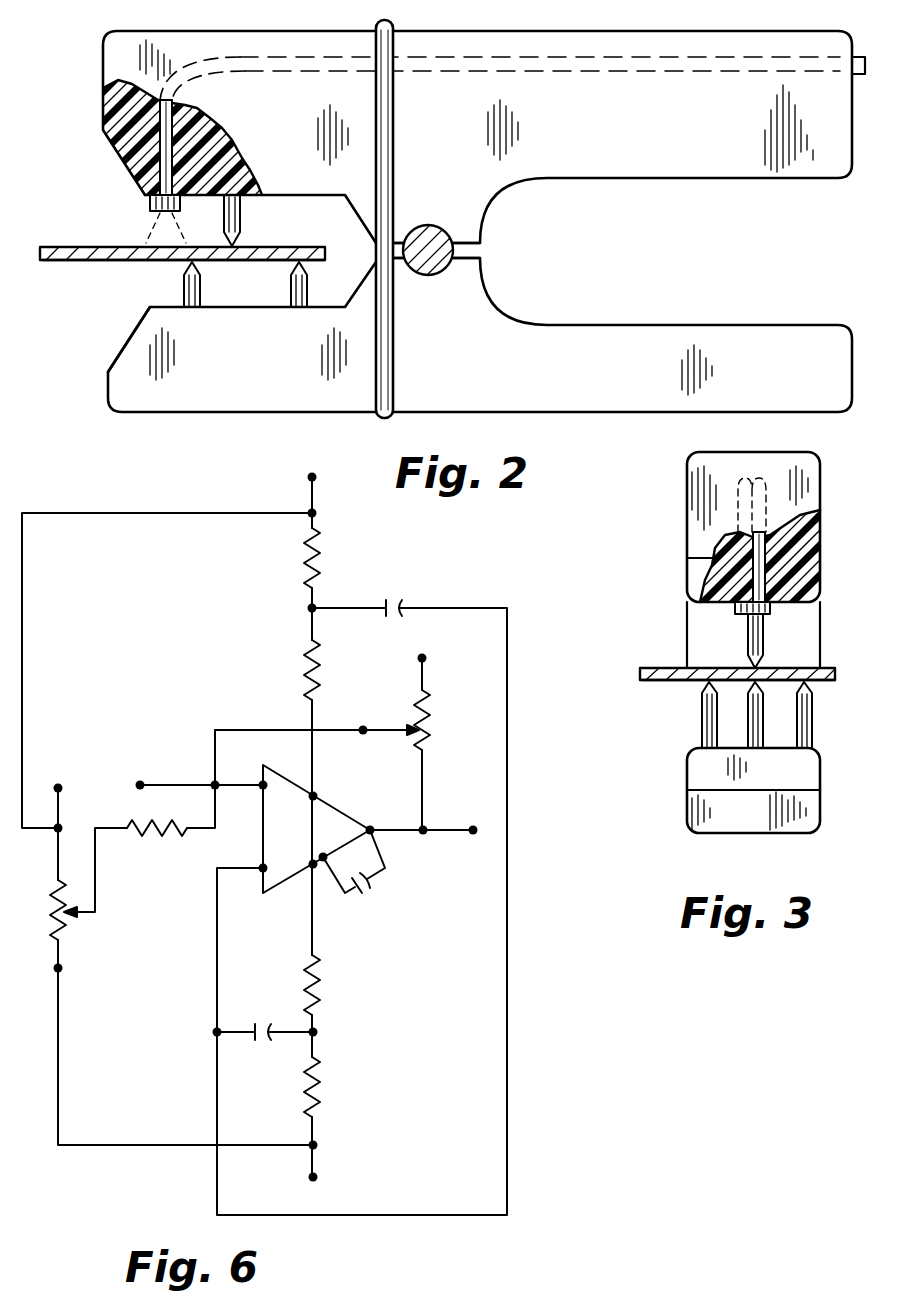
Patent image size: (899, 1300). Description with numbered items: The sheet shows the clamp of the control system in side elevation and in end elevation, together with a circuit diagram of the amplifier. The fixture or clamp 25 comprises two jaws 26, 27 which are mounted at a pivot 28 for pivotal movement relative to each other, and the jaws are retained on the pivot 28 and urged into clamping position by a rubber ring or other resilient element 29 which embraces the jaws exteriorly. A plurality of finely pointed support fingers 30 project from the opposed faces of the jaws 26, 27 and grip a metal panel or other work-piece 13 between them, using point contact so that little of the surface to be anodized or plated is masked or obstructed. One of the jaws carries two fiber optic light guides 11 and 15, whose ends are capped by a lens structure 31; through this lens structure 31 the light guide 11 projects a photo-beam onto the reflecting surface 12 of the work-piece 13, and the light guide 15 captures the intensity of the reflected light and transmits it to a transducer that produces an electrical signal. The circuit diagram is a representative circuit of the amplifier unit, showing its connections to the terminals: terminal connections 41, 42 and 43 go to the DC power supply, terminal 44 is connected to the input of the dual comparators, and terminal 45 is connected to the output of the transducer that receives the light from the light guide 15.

In FIG. 3, the fiber optic light guide 11 is at (745, 575).
In FIG. 2, the reflecting surface 12 is at (98, 251).
In FIG. 3, the reflecting surface 12 is at (673, 668).
In FIG. 2, the work-piece 13 is at (72, 262).
In FIG. 3, the work-piece 13 is at (648, 679).
In FIG. 2, the fiber optic light guide 15 is at (165, 150).
In FIG. 3, the fiber optic light guide 15 is at (760, 555).
In FIG. 2, the fixture or clamp 25 is at (108, 404).
In FIG. 3, the fixture or clamp 25 is at (687, 785).
In FIG. 2, the jaw 26 is at (105, 58).
In FIG. 3, the jaw 26 is at (697, 465).
In FIG. 2, the jaw 27 is at (132, 352).
In FIG. 3, the jaw 27 is at (812, 773).
In FIG. 2, the pivot 28 is at (434, 272).
In FIG. 2, the rubber ring or resilient element 29 is at (382, 420).
In FIG. 2, the support fingers 30 is at (243, 216).
In FIG. 3, the support fingers 30 is at (760, 634).
In FIG. 2, the lens structure 31 is at (150, 204).
In FIG. 3, the lens structure 31 is at (735, 606).
In FIG. 6, the terminal connection 41 is at (304, 477).
In FIG. 6, the terminal connection 42 is at (320, 1180).
In FIG. 6, the terminal connection 43 is at (426, 656).
In FIG. 6, the terminal 44 is at (473, 826).
In FIG. 6, the terminal 45 is at (148, 778).